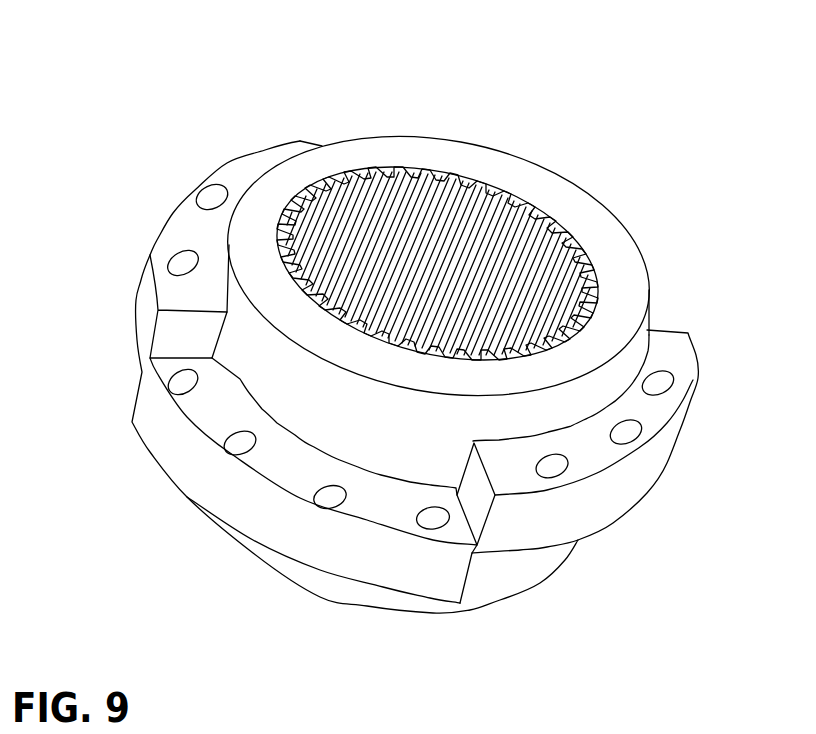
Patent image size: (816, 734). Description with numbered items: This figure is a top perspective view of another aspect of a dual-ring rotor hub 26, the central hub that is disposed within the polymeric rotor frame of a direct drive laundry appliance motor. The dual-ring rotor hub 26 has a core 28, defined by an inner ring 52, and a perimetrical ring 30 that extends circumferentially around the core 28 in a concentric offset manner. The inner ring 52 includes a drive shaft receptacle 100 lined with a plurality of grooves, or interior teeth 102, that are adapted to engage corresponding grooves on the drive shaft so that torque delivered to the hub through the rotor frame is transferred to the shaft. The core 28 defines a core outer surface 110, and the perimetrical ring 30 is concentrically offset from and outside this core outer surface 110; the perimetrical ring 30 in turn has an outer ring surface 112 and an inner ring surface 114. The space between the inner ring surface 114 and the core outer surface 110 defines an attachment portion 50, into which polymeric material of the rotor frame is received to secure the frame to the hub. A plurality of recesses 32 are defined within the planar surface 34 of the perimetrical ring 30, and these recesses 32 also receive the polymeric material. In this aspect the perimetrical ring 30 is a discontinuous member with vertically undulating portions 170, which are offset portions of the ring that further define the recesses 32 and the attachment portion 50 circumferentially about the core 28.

The dual-ring rotor hub 26 is at (291, 103).
The core 28 is at (439, 242).
The perimetrical ring 30 is at (475, 494).
The recesses 32 is at (217, 190).
The planar surface 34 is at (141, 223).
The attachment portion 50 is at (623, 391).
The inner ring 52 is at (343, 152).
The drive shaft receptacle 100 is at (437, 220).
The interior teeth 102 is at (412, 185).
The core outer surface 110 is at (594, 391).
The outer ring surface 112 is at (620, 490).
The inner ring surface 114 is at (664, 375).
The vertically undulating portions 170 is at (452, 478).